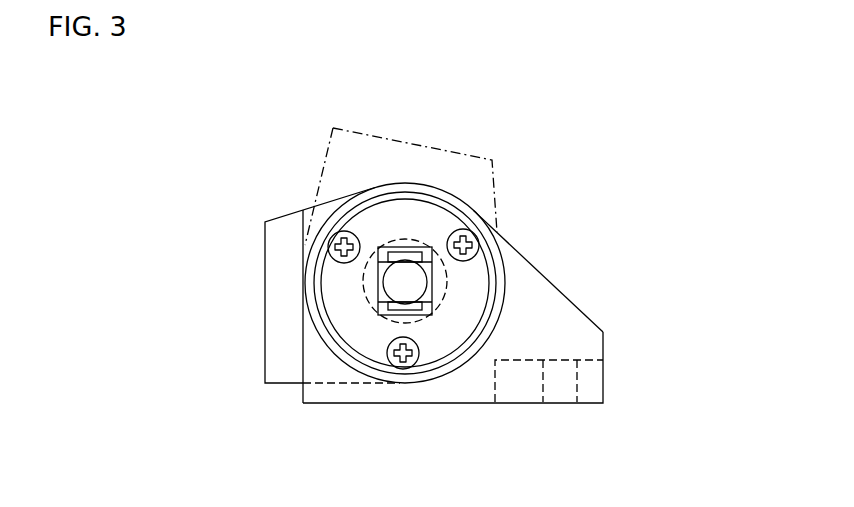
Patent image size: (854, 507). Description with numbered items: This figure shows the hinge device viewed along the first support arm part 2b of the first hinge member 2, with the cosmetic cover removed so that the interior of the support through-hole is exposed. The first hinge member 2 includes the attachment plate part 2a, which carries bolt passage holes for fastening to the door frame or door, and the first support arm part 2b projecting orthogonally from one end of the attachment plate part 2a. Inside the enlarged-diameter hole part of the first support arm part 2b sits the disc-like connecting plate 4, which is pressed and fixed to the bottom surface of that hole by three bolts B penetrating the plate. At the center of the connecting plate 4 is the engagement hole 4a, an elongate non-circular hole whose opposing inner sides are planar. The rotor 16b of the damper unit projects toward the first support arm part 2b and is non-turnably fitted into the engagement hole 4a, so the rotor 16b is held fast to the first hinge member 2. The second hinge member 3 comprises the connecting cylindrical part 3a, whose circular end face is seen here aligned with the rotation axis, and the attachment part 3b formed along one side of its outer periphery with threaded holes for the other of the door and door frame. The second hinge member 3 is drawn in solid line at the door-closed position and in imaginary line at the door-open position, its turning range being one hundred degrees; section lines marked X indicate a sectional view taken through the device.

The first hinge member 2 is at (583, 310).
The attachment plate part 2a is at (523, 383).
The first support arm part 2b is at (555, 297).
The second hinge member 3 is at (292, 208).
The connecting cylindrical part 3a is at (382, 187).
The attachment part 3b is at (474, 155).
The connecting plate 4 is at (443, 206).
The engagement hole 4a is at (403, 264).
The rotor 16b is at (395, 286).
The bolts B is at (332, 261).
The view direction X is at (403, 137).